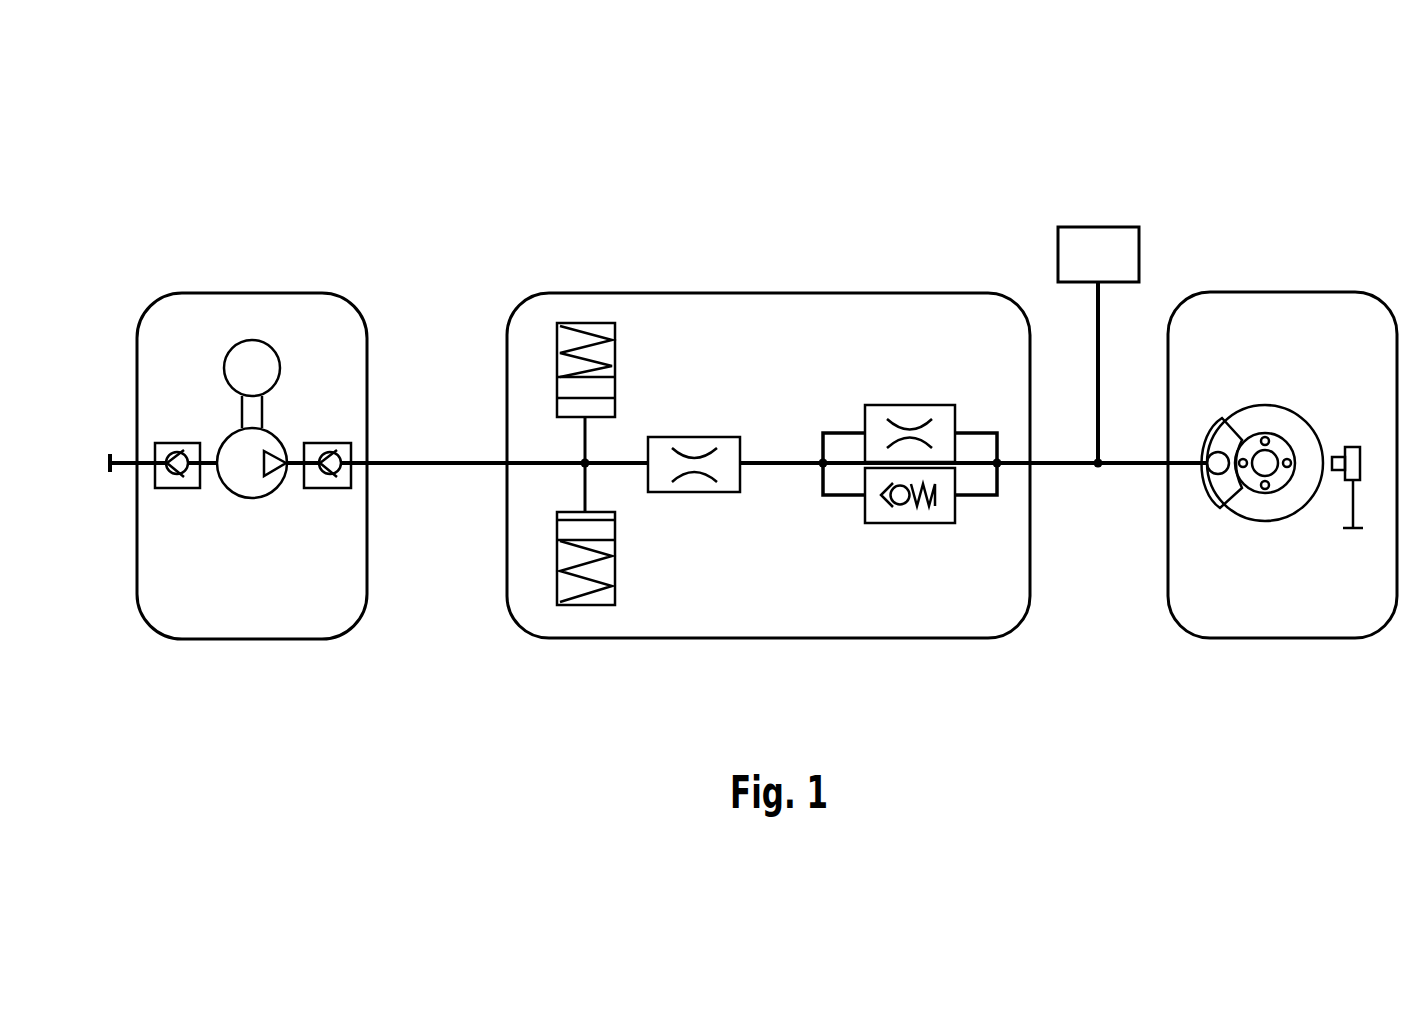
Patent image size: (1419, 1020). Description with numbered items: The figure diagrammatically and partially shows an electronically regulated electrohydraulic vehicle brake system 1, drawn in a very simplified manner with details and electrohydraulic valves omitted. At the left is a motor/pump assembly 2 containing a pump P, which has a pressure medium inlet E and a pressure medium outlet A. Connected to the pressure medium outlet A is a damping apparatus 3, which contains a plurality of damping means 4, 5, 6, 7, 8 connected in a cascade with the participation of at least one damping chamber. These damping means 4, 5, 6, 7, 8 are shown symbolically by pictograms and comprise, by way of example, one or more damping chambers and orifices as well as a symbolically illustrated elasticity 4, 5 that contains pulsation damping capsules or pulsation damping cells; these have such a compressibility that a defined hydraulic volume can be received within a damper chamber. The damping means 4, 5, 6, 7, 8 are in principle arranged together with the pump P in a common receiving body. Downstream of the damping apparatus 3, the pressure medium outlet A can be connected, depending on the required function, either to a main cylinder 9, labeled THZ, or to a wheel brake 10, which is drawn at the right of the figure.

The vehicle brake system 1 is at (272, 138).
The motor/pump assembly 2 is at (218, 278).
The damping apparatus 3 is at (638, 278).
The damping means 4 is at (557, 369).
The damping means 5 is at (557, 557).
The damping means 6 is at (693, 437).
The damping means 7 is at (910, 405).
The damping means 8 is at (910, 523).
The main cylinder 9 is at (1098, 227).
The wheel brake 10 is at (1220, 490).